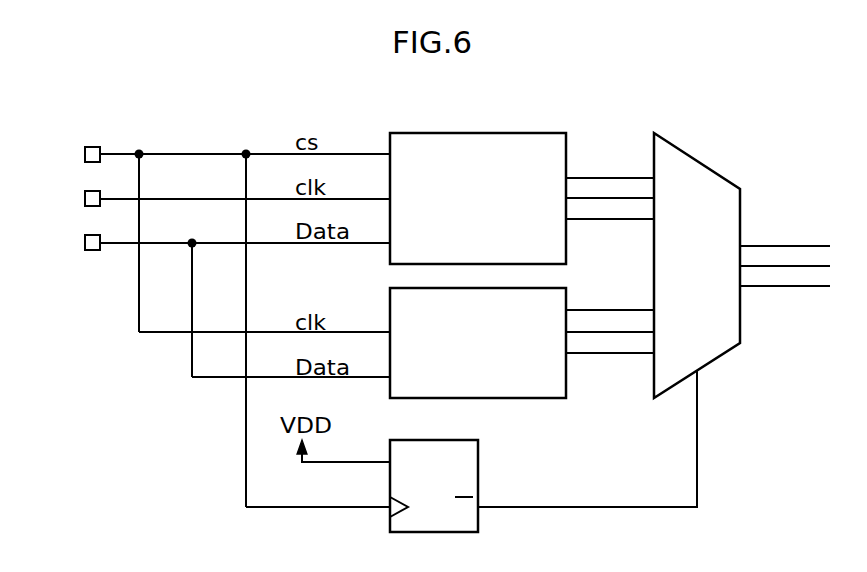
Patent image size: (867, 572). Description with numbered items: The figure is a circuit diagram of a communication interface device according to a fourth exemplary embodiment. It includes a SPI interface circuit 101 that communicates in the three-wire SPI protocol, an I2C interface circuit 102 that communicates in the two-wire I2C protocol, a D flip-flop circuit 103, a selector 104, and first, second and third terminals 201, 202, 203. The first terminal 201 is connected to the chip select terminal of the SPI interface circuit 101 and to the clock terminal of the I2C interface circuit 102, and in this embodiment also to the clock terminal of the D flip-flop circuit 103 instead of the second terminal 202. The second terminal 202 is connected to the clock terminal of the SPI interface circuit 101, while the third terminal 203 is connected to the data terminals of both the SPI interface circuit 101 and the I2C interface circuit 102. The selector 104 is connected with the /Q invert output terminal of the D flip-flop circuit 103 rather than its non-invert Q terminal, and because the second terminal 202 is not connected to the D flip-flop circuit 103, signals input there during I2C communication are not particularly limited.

The first terminal 201 is at (86, 148).
The second terminal 202 is at (86, 192).
The third terminal 203 is at (86, 236).
The SPI interface circuit 101 is at (557, 133).
The I2C interface circuit 102 is at (557, 288).
The D flip-flop circuit 103 is at (478, 451).
The selector 104 is at (717, 172).